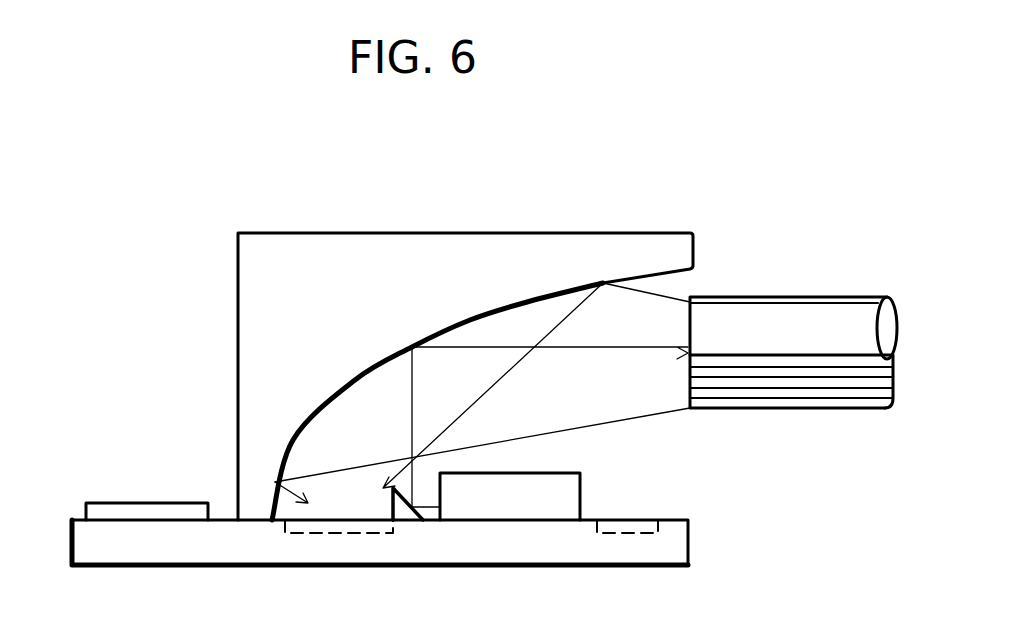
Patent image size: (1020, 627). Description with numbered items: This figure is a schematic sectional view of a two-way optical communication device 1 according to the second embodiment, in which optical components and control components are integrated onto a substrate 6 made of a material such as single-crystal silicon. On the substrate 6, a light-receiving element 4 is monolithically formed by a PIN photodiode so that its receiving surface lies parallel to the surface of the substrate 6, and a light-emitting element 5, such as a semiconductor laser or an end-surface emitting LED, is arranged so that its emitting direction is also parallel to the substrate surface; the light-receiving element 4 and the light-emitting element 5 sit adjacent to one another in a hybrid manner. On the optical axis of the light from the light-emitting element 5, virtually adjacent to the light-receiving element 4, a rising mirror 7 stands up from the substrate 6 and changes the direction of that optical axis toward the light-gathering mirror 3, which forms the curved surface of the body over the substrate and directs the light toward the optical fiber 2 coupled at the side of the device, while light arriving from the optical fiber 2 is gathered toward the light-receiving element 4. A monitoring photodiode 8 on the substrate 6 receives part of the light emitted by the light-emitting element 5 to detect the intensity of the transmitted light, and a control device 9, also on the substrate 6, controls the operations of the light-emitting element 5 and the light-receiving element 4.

The two-way optical communication device 1 is at (485, 177).
The optical fiber 2 is at (781, 310).
The light-gathering mirror 3 is at (317, 232).
The light-receiving element 4 is at (338, 535).
The light-emitting element 5 is at (572, 493).
The substrate 6 is at (508, 550).
The rising mirror 7 is at (408, 518).
The monitoring photodiode 8 is at (650, 537).
The control device 9 is at (148, 490).